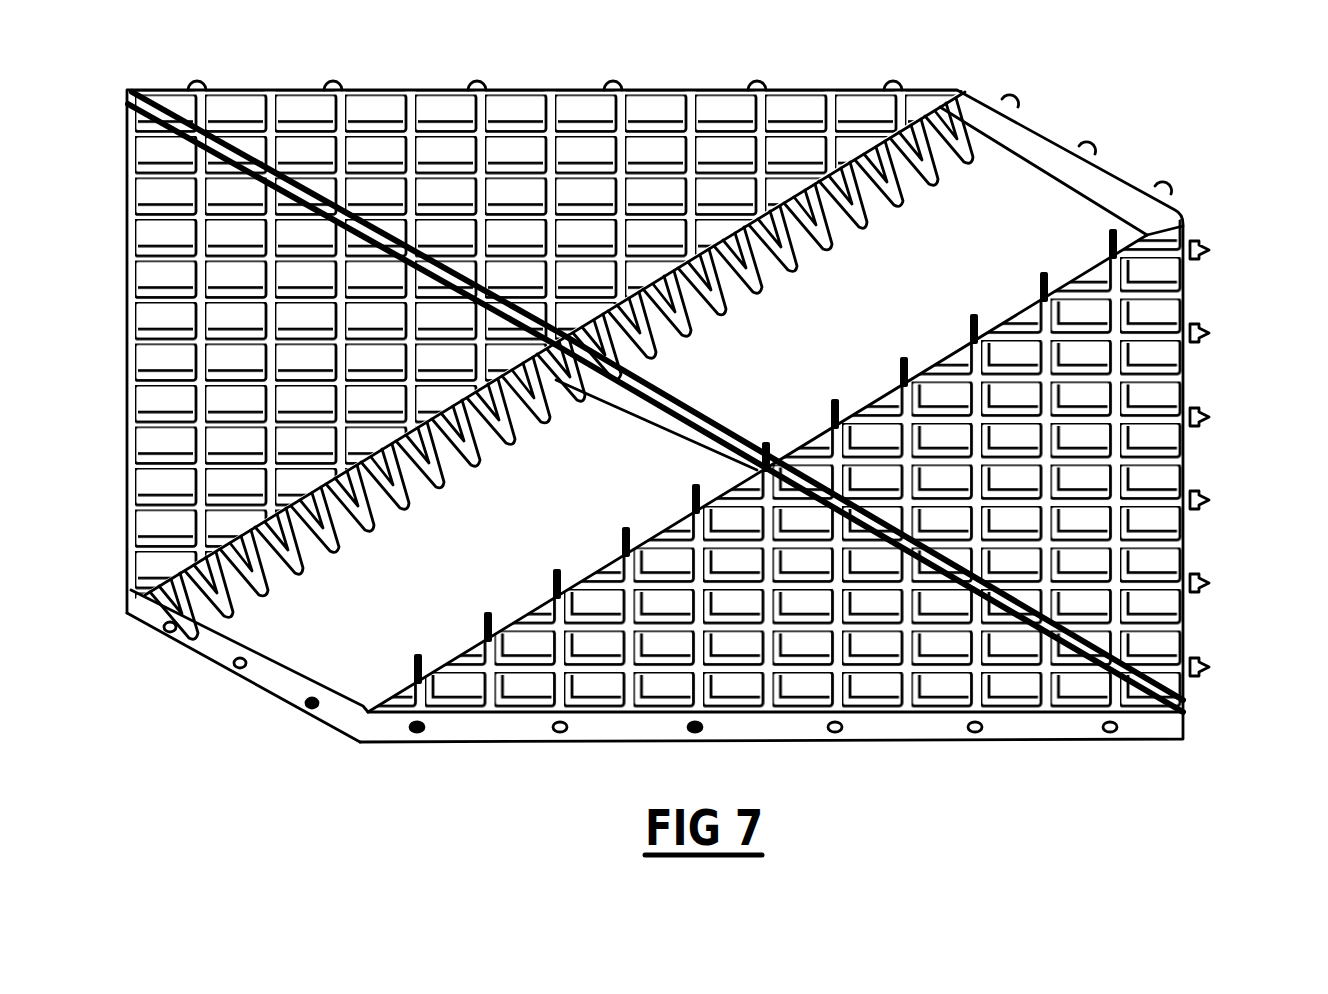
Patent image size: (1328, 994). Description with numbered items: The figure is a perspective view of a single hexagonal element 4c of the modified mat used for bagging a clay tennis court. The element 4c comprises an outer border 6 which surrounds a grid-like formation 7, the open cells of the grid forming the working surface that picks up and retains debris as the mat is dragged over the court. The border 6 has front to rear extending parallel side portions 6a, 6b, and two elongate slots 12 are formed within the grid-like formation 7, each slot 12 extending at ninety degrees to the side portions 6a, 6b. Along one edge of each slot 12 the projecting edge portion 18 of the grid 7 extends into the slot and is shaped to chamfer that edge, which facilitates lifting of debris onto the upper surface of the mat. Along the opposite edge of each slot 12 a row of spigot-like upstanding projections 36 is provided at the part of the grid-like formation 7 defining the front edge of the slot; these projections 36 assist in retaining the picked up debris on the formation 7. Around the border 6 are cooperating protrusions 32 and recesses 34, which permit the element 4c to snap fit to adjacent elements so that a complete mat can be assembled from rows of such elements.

The grid-like formation 7 is at (655, 105).
The protrusions 32 is at (1018, 100).
The side portion of the border 6b is at (1047, 152).
The outer border 6 is at (1127, 184).
The element 4c is at (1222, 434).
The elongate slot 12 is at (717, 378).
The upstanding projections 36 is at (975, 322).
The projecting edge portion 18 is at (288, 566).
The side portion of the border 6a is at (255, 677).
The recesses 34 is at (306, 708).